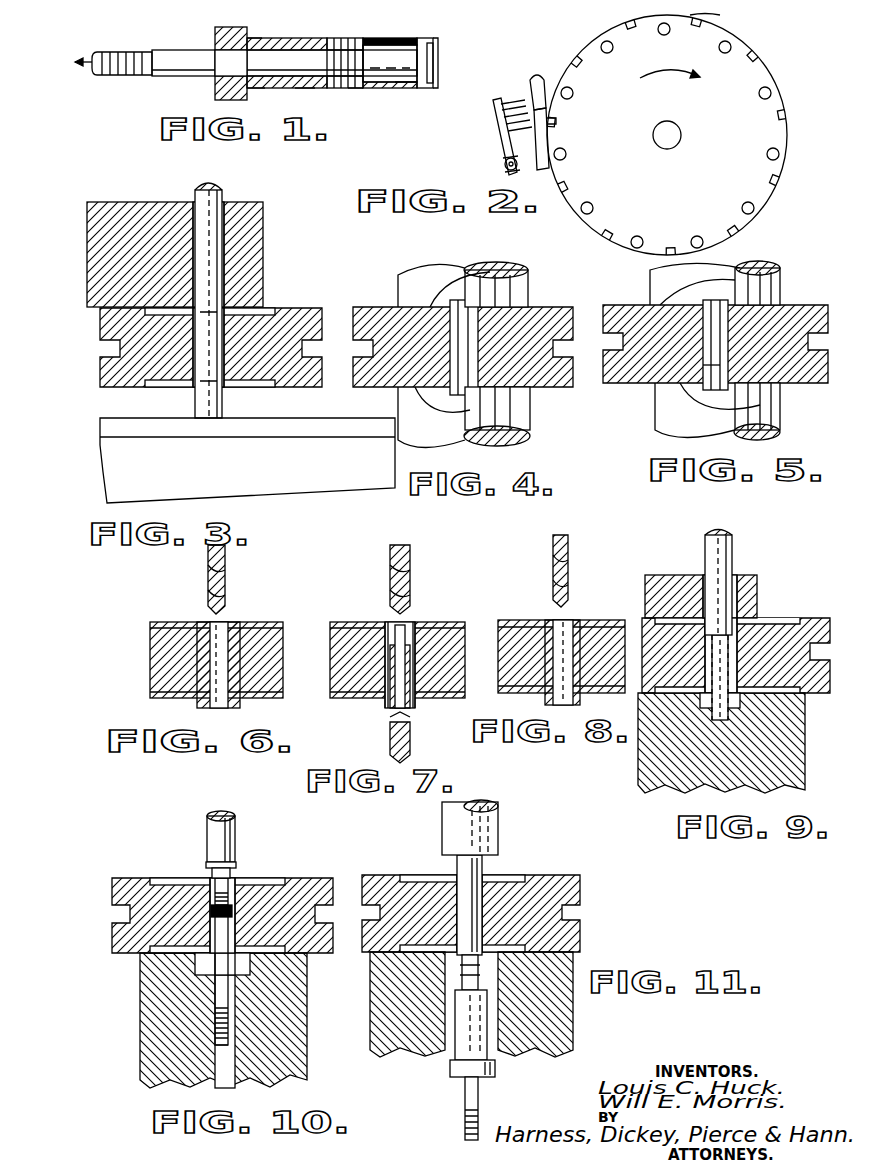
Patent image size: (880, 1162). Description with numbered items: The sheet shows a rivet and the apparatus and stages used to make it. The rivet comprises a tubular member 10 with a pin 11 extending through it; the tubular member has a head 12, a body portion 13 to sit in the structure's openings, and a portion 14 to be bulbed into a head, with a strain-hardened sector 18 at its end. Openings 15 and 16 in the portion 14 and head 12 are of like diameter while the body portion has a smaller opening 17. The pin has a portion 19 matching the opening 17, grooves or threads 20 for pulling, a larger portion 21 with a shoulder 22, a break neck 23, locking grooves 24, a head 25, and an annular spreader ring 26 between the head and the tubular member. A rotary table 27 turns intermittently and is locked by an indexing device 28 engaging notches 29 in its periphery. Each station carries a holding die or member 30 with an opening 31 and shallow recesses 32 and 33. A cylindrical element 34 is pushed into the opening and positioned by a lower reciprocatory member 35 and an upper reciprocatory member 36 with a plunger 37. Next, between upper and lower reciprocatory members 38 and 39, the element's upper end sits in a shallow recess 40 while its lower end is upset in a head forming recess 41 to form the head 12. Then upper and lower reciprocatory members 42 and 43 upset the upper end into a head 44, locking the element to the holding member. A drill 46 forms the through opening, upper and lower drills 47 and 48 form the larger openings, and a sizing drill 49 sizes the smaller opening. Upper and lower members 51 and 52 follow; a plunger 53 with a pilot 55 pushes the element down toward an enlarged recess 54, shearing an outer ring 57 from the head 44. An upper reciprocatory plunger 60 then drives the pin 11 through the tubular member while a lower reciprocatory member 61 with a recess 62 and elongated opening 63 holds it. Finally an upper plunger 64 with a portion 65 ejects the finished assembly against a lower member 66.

In FIG. 11, the tubular member 10 is at (490, 1053).
In FIG. 1, the pin 11 is at (162, 78).
In FIG. 10, the pin 11 is at (232, 878).
In FIG. 11, the pin 11 is at (463, 1096).
In FIG. 1, the head 12 is at (214, 98).
In FIG. 4, the head 12 is at (460, 398).
In FIG. 5, the head 12 is at (700, 388).
In FIG. 6, the head 12 is at (241, 703).
In FIG. 7, the head 12 is at (420, 706).
In FIG. 8, the head 12 is at (546, 703).
In FIG. 9, the head 12 is at (740, 700).
In FIG. 10, the head 12 is at (245, 960).
In FIG. 11, the head 12 is at (449, 1070).
In FIG. 1, the body portion 13 is at (303, 48).
In FIG. 1, the portion 14 is at (368, 44).
In FIG. 1, the opening 15 is at (366, 86).
In FIG. 7, the opening 15 is at (386, 622).
In FIG. 1, the opening 16 is at (249, 42).
In FIG. 7, the opening 16 is at (392, 708).
In FIG. 1, the opening 17 is at (336, 45).
In FIG. 7, the opening 17 is at (396, 680).
In FIG. 1, the strain-hardened sector 18 is at (398, 40).
In FIG. 1, the portion 19 is at (252, 88).
In FIG. 1, the grooves or threads 20 is at (118, 78).
In FIG. 1, the portion 21 is at (402, 88).
In FIG. 1, the shoulder 22 is at (332, 88).
In FIG. 1, the break neck 23 is at (357, 88).
In FIG. 1, the locking grooves 24 is at (368, 66).
In FIG. 1, the head 25 is at (426, 88).
In FIG. 1, the spreader ring 26 is at (430, 40).
In FIG. 2, the rotary table 27 is at (775, 106).
In FIG. 2, the indexing device 28 is at (516, 95).
In FIG. 2, the notches 29 is at (712, 17).
In FIG. 3, the holding die or member 30 is at (303, 308).
In FIG. 4, the holding die or member 30 is at (548, 306).
In FIG. 5, the holding die or member 30 is at (798, 304).
In FIG. 6, the holding die or member 30 is at (283, 622).
In FIG. 7, the holding die or member 30 is at (440, 622).
In FIG. 8, the holding die or member 30 is at (612, 620).
In FIG. 9, the holding die or member 30 is at (822, 618).
In FIG. 10, the holding die or member 30 is at (310, 878).
In FIG. 11, the holding die or member 30 is at (566, 875).
In FIG. 3, the opening 31 is at (226, 388).
In FIG. 11, the opening 31 is at (520, 900).
In FIG. 3, the recess 32 is at (268, 388).
In FIG. 3, the recess 33 is at (270, 308).
In FIG. 3, the element 34 is at (200, 398).
In FIG. 5, the element 34 is at (705, 364).
In FIG. 3, the lower reciprocatory member 35 is at (234, 462).
In FIG. 3, the upper reciprocatory member 36 is at (258, 234).
In FIG. 3, the plunger 37 is at (224, 195).
In FIG. 4, the upper reciprocatory member 38 is at (526, 268).
In FIG. 4, the lower reciprocatory member 39 is at (530, 410).
In FIG. 1, the shallow recess 40 is at (304, 88).
In FIG. 4, the shallow recess 40 is at (468, 272).
In FIG. 4, the head forming recess 41 is at (470, 445).
In FIG. 5, the upper reciprocatory member 42 is at (782, 276).
In FIG. 5, the lower reciprocatory member 43 is at (780, 410).
In FIG. 5, the head 44 is at (748, 266).
In FIG. 6, the head 44 is at (241, 622).
In FIG. 6, the drill 46 is at (226, 562).
In FIG. 7, the upper drill 47 is at (412, 562).
In FIG. 7, the lower drill 48 is at (412, 748).
In FIG. 8, the sizing drill 49 is at (570, 556).
In FIG. 9, the upper member 51 is at (745, 570).
In FIG. 9, the lower member 52 is at (792, 728).
In FIG. 9, the plunger 53 is at (735, 535).
In FIG. 9, the enlarged recess 54 is at (700, 706).
In FIG. 9, the pilot 55 is at (760, 610).
In FIG. 9, the outer ring 57 is at (700, 578).
In FIG. 10, the upper reciprocatory plunger 60 is at (237, 832).
In FIG. 10, the lower reciprocatory member 61 is at (150, 1015).
In FIG. 10, the recess 62 is at (250, 972).
In FIG. 10, the elongated opening 63 is at (235, 1046).
In FIG. 11, the upper plunger 64 is at (498, 830).
In FIG. 11, the portion 65 is at (486, 864).
In FIG. 11, the lower member 66 is at (575, 962).